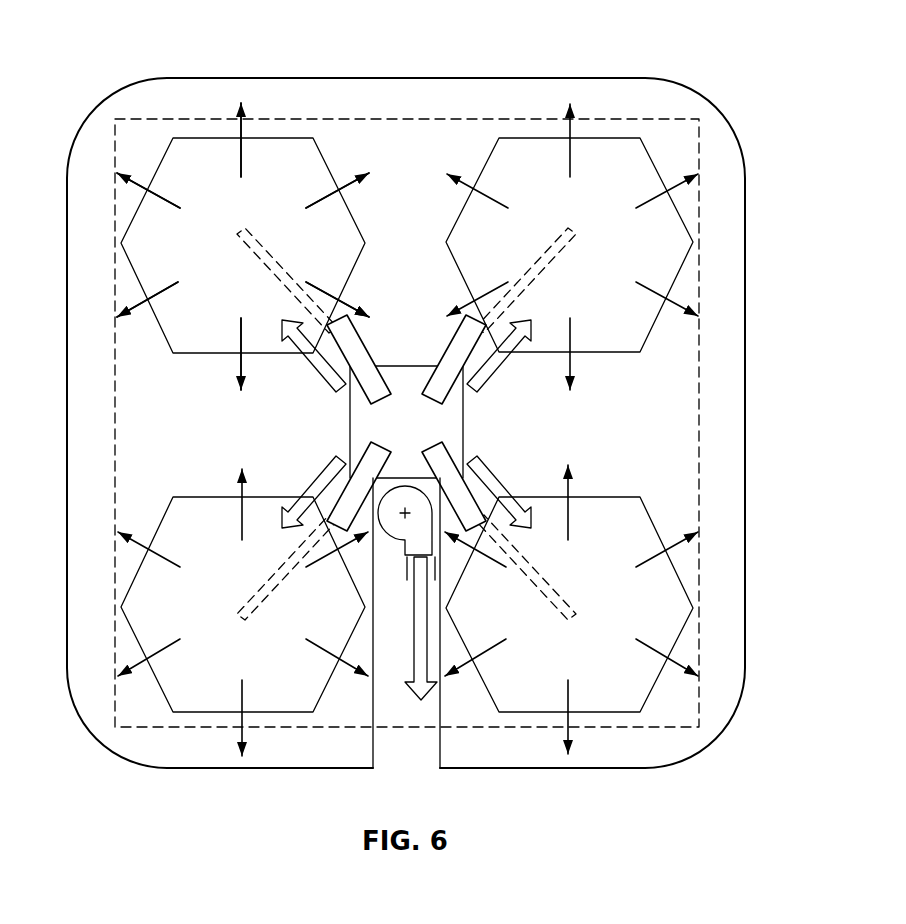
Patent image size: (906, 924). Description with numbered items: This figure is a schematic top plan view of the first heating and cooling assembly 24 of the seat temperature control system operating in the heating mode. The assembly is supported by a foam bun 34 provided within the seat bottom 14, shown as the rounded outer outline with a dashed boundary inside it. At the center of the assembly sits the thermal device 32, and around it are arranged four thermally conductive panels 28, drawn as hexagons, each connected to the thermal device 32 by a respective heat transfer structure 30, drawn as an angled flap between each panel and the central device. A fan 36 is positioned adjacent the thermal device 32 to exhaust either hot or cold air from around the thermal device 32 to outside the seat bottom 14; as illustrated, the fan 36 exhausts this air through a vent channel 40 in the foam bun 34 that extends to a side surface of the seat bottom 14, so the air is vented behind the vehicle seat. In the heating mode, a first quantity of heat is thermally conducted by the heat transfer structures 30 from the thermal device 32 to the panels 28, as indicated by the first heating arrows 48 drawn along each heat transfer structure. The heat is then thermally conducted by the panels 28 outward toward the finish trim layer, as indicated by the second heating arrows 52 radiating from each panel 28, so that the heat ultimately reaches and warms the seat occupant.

The seat bottom 14 is at (530, 78).
The first heating and cooling assembly 24 is at (435, 116).
The thermally conductive panels 28 is at (352, 216).
The heat transfer structures 30 is at (353, 341).
The thermal device 32 is at (464, 422).
The foam bun 34 is at (138, 438).
The fan 36 is at (403, 548).
The vent channel 40 is at (418, 738).
The first heating arrows 48 is at (323, 377).
The second heating arrows 52 is at (229, 372).